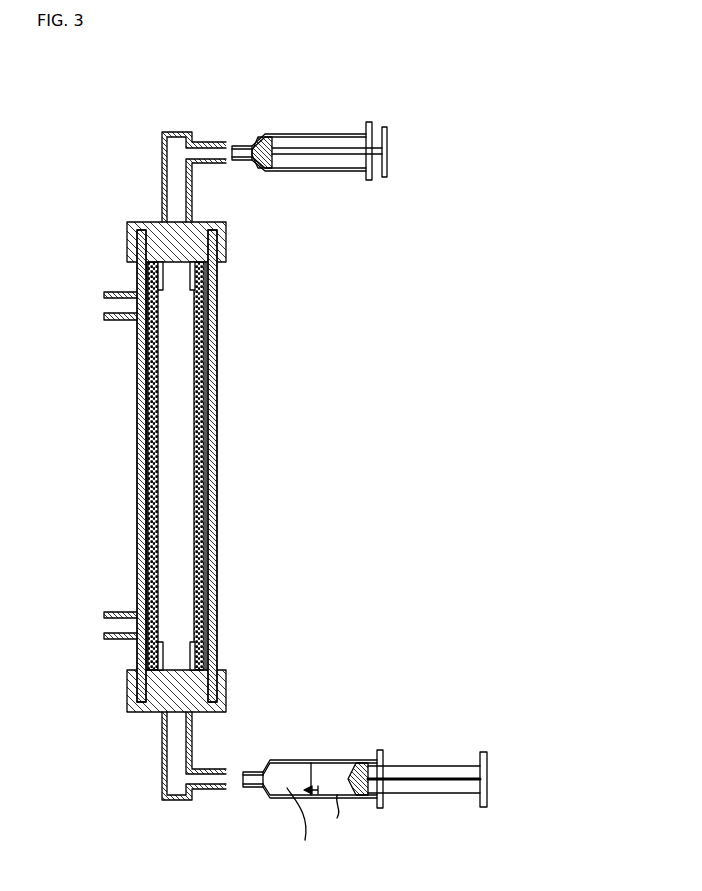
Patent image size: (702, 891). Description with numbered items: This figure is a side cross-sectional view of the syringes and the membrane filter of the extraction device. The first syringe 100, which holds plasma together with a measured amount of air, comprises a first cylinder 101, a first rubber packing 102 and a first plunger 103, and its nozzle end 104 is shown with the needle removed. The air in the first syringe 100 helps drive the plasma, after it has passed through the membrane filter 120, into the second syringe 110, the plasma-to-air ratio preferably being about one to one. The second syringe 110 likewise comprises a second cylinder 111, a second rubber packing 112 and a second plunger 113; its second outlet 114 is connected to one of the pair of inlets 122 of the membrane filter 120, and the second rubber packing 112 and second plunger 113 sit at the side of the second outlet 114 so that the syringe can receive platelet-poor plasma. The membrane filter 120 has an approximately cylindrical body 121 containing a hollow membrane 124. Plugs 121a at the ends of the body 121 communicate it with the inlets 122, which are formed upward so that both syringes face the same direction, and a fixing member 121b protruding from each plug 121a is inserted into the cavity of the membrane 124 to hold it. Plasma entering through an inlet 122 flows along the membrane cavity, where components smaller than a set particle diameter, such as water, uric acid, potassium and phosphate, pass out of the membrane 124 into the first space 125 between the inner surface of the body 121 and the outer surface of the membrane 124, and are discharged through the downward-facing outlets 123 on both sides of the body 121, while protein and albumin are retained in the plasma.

The first syringe 100 is at (365, 735).
The first cylinder 101 is at (332, 760).
The first rubber packing 102 is at (360, 773).
The first plunger 103 is at (432, 765).
The syringe tip 104 is at (252, 772).
The second syringe 110 is at (329, 177).
The second cylinder 111 is at (345, 134).
The second rubber packing 112 is at (263, 138).
The second plunger 113 is at (387, 142).
The second outlet 114 is at (243, 160).
The membrane filter 120 is at (192, 477).
The body 121 is at (213, 535).
The plug 121a is at (226, 249).
The fixing member 121b is at (190, 292).
The inlet 122 is at (209, 142).
The outlet 123 is at (110, 321).
The membrane 124 is at (203, 575).
The first space 125 is at (206, 474).